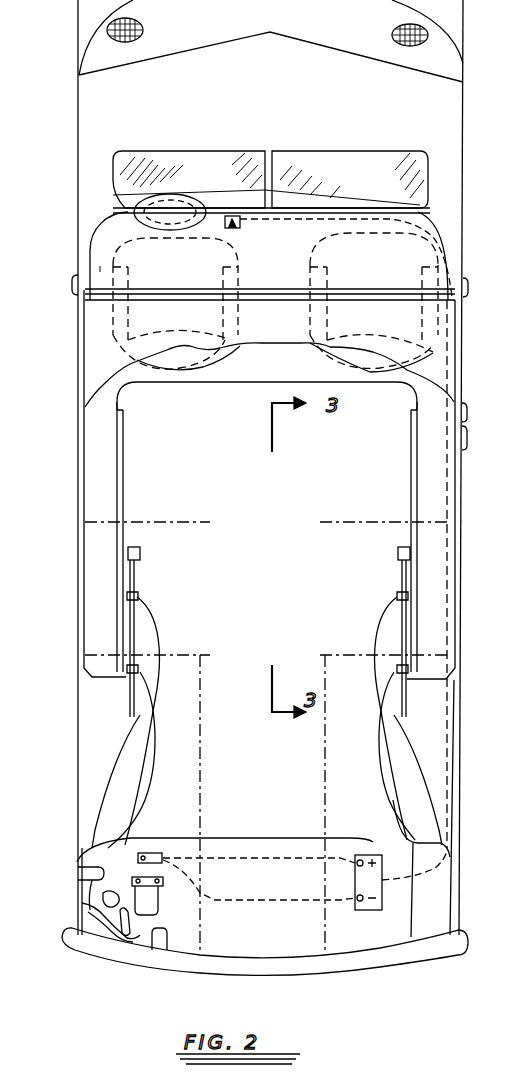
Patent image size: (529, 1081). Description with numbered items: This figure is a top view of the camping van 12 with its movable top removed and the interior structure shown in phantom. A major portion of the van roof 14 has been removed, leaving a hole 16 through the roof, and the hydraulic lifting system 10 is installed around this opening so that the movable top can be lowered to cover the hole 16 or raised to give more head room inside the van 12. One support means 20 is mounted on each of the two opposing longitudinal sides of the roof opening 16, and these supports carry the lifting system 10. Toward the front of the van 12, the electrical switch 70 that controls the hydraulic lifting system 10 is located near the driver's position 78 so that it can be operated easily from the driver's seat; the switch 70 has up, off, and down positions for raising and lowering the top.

The hydraulic lifting system 10 is at (420, 615).
The van 12 is at (465, 120).
The van roof 14 is at (425, 243).
The hole 16 is at (375, 505).
The support means 20 is at (417, 462).
The electrical switch 70 is at (225, 222).
The driver's position 78 is at (108, 269).